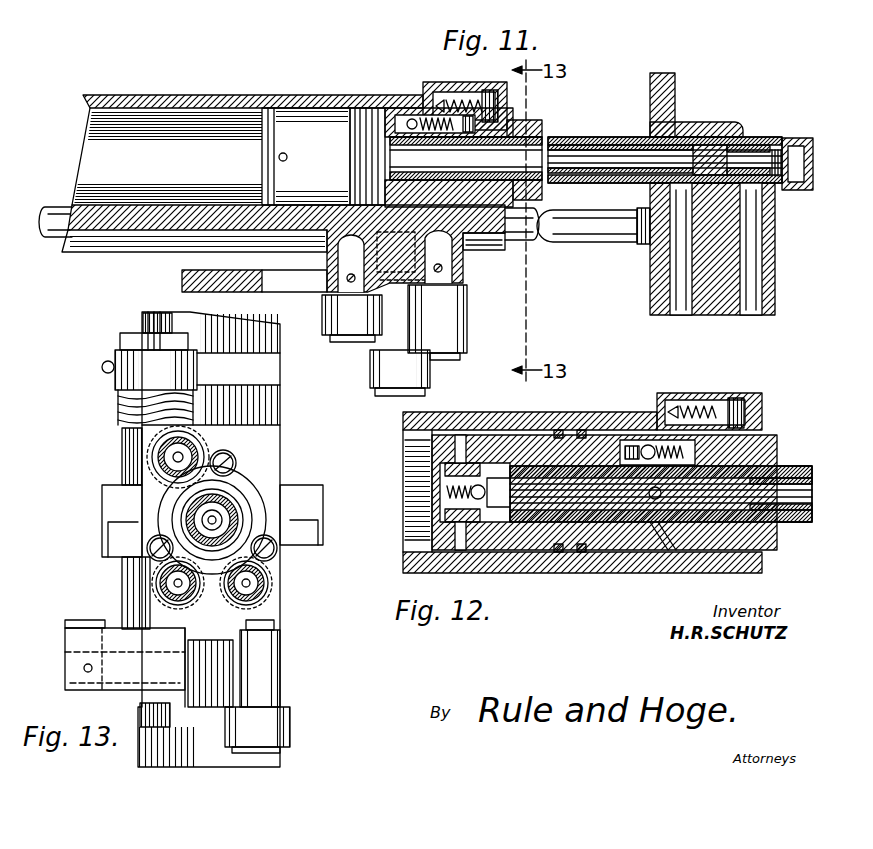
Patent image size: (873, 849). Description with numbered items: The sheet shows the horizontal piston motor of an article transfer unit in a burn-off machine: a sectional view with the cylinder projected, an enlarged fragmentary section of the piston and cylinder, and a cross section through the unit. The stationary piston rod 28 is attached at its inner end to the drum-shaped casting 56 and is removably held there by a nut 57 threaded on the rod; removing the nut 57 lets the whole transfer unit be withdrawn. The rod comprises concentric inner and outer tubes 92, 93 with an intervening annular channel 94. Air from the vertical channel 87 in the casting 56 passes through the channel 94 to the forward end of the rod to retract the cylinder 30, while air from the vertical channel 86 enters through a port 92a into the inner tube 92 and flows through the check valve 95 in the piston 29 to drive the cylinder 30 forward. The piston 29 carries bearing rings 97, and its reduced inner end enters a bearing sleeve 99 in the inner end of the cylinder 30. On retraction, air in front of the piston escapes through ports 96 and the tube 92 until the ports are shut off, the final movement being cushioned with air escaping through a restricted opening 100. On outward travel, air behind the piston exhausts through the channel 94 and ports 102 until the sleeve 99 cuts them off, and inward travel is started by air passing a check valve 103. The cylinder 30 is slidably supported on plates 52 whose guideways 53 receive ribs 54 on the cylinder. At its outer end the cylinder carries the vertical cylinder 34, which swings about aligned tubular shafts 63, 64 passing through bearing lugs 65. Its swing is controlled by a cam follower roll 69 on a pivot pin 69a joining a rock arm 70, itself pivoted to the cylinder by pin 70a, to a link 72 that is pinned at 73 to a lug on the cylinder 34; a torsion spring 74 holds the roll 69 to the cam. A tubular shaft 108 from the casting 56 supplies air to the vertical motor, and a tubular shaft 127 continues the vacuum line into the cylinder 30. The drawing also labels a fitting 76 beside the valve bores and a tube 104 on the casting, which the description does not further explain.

In FIG. 11, the piston rod 28 is at (569, 132).
In FIG. 13, the piston rod 28 is at (190, 508).
In FIG. 12, the piston rod 28 is at (783, 464).
In FIG. 11, the piston 29 is at (318, 116).
In FIG. 12, the piston 29 is at (515, 435).
In FIG. 11, the cylinder 30 is at (240, 94).
In FIG. 12, the cylinder 30 is at (568, 412).
In FIG. 13, the cylinder 34 is at (270, 408).
In FIG. 13, the plates 52 is at (110, 498).
In FIG. 13, the guideways 53 is at (118, 530).
In FIG. 13, the ribs 54 is at (305, 528).
In FIG. 11, the casting 56 is at (652, 280).
In FIG. 11, the nut 57 is at (799, 138).
In FIG. 13, the tubular shaft 63 is at (140, 331).
In FIG. 13, the tubular shaft 64 is at (145, 715).
In FIG. 13, the bearing lugs 65 is at (176, 370).
In FIG. 11, the cam follower roll 69 is at (430, 371).
In FIG. 13, the cam follower roll 69 is at (288, 722).
In FIG. 11, the pivot pin 69a is at (382, 394).
In FIG. 13, the pivot pin 69a is at (280, 749).
In FIG. 11, the rock arm 70 is at (384, 340).
In FIG. 13, the rock arm 70 is at (256, 672).
In FIG. 11, the pivot pin 70a is at (458, 268).
In FIG. 11, the link 72 is at (249, 272).
In FIG. 13, the link 72 is at (116, 628).
In FIG. 13, the pivot pin 73 is at (83, 620).
In FIG. 13, the torsion spring 74 is at (118, 408).
In FIG. 11, the valve nut 76 is at (322, 310).
In FIG. 11, the vertical channel 86 is at (753, 308).
In FIG. 11, the vertical channel 87 is at (680, 308).
In FIG. 11, the inner tube 92 is at (595, 146).
In FIG. 13, the inner tube 92 is at (198, 520).
In FIG. 12, the inner tube 92 is at (802, 512).
In FIG. 11, the port 92a is at (755, 142).
In FIG. 11, the outer tube 93 is at (622, 136).
In FIG. 13, the outer tube 93 is at (233, 494).
In FIG. 12, the outer tube 93 is at (795, 468).
In FIG. 11, the annular channel 94 is at (615, 178).
In FIG. 13, the annular channel 94 is at (222, 520).
In FIG. 12, the annular channel 94 is at (790, 522).
In FIG. 12, the check valve 95 is at (477, 500).
In FIG. 12, the ports 96 is at (462, 437).
In FIG. 11, the bearing rings 97 is at (362, 112).
In FIG. 12, the bearing rings 97 is at (581, 553).
In FIG. 11, the bearing sleeve 99 is at (406, 116).
In FIG. 12, the bearing sleeve 99 is at (610, 435).
In FIG. 12, the restricted opening 100 is at (432, 460).
In FIG. 12, the ports 102 is at (663, 538).
In FIG. 12, the check valve 103 is at (646, 444).
In FIG. 11, the tube 104 is at (598, 230).
In FIG. 13, the tube 104 is at (260, 583).
In FIG. 13, the tubular shaft 108 is at (165, 457).
In FIG. 13, the tubular shaft 127 is at (165, 583).